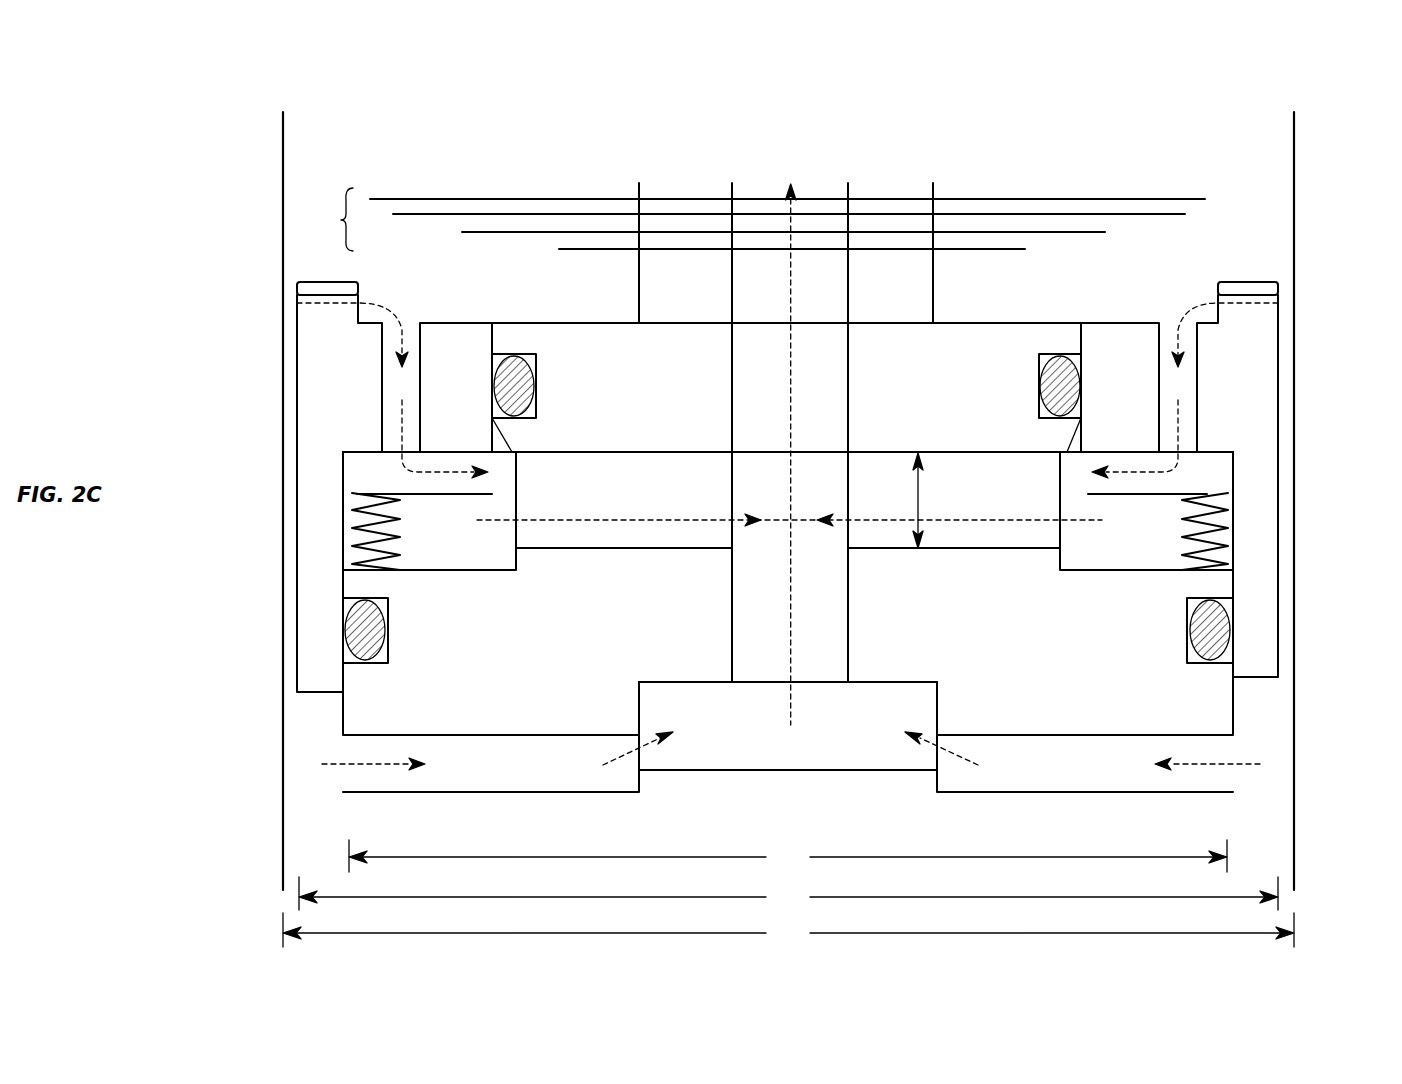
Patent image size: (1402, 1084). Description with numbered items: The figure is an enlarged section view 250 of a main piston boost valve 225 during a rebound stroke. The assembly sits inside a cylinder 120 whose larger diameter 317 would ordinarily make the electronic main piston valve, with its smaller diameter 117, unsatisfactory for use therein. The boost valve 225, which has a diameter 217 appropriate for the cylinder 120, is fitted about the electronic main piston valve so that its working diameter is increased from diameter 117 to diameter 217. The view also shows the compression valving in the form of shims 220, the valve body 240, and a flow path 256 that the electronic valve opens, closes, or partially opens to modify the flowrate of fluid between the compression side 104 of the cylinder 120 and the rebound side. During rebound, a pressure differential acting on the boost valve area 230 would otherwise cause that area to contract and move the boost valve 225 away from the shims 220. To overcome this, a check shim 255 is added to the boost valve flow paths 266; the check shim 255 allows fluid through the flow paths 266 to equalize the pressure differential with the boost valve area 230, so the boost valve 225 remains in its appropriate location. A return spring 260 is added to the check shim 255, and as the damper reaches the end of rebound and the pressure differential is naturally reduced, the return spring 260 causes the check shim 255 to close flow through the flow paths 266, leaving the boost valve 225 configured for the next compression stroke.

The enlarged section view 250 is at (381, 88).
The cylinder 120 is at (1297, 202).
The shims 220 is at (341, 220).
The main piston boost valve 225 is at (313, 358).
The boost valve flow paths 266 is at (1178, 383).
The check shim 255 is at (402, 490).
The return spring 260 is at (350, 545).
The valve body 240 is at (340, 712).
The flow path 256 is at (1245, 748).
The boost valve area 230 is at (918, 480).
The compression side 104 is at (808, 802).
The diameter 117 is at (808, 869).
The diameter 217 is at (808, 907).
The diameter 317 is at (808, 942).